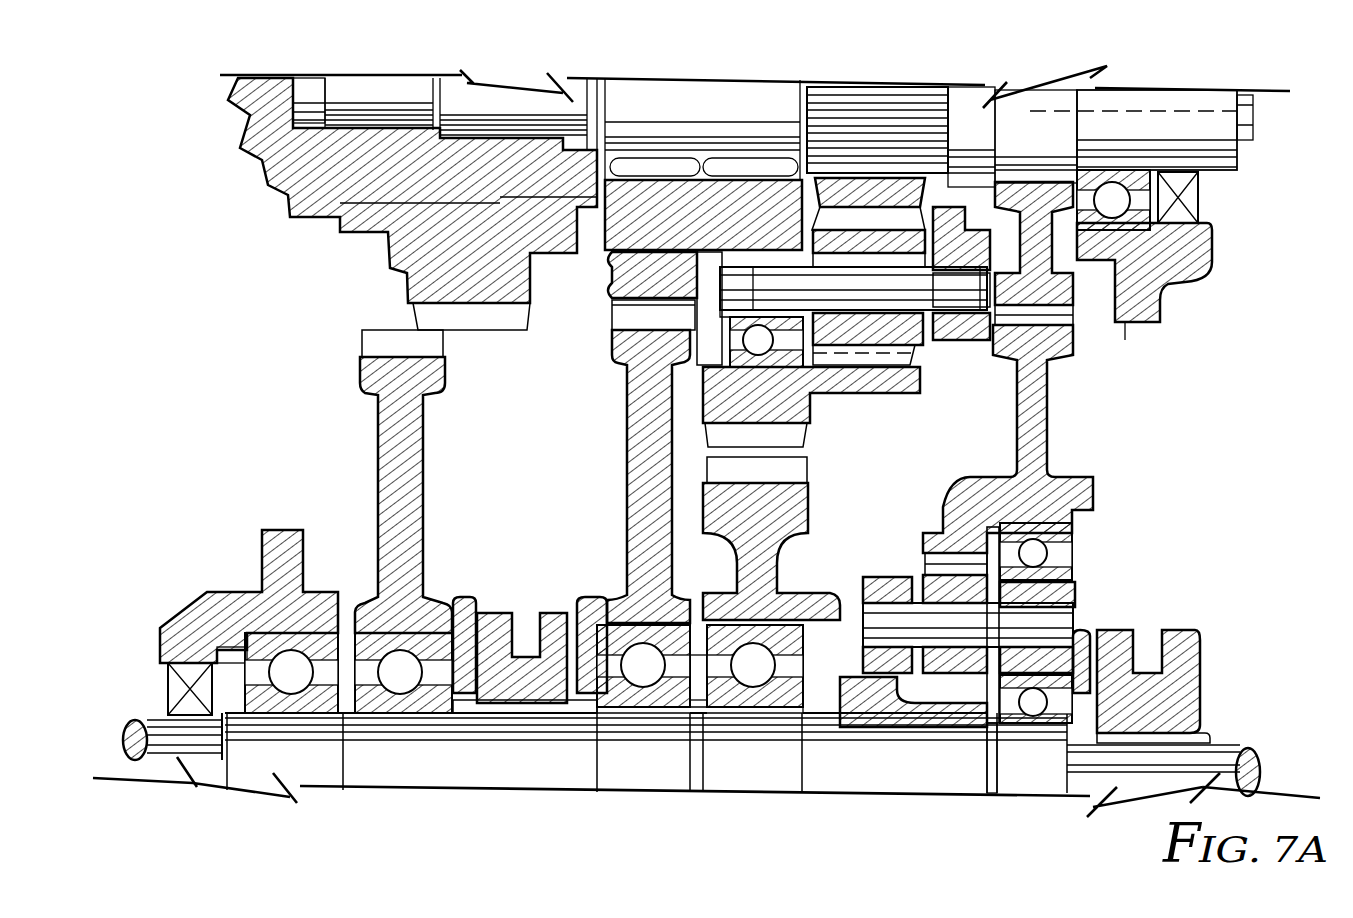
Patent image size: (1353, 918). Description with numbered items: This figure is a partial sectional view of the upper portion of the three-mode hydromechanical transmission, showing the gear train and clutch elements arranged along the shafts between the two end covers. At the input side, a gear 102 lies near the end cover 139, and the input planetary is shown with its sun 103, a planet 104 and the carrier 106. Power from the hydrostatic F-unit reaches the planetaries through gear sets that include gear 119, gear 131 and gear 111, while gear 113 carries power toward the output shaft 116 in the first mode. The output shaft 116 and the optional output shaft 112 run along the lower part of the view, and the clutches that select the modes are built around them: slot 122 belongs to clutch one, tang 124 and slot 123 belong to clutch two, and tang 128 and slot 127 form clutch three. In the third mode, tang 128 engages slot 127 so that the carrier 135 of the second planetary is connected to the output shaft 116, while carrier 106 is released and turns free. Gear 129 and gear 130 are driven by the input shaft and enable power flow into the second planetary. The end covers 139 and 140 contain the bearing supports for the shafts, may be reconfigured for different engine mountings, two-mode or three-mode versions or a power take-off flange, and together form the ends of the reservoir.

The gear 102 is at (407, 273).
The sun gear 103 is at (863, 187).
The planet gear 104 is at (887, 237).
The carrier 106 is at (677, 193).
The gear 111 is at (640, 427).
The optional output shaft 112 is at (1210, 767).
The gear 113 is at (360, 363).
The output shaft 116 is at (163, 727).
The gear 119 is at (793, 400).
The slot 122 is at (455, 603).
The slot 123 is at (537, 617).
The tang 124 is at (593, 607).
The slot 127 is at (1080, 647).
The tang 128 is at (1177, 647).
The gear 129 is at (1037, 187).
The gear 130 is at (1053, 360).
The gear 131 is at (790, 513).
The carrier 135 is at (1067, 590).
The end cover 139 is at (237, 600).
The end cover 140 is at (1140, 333).